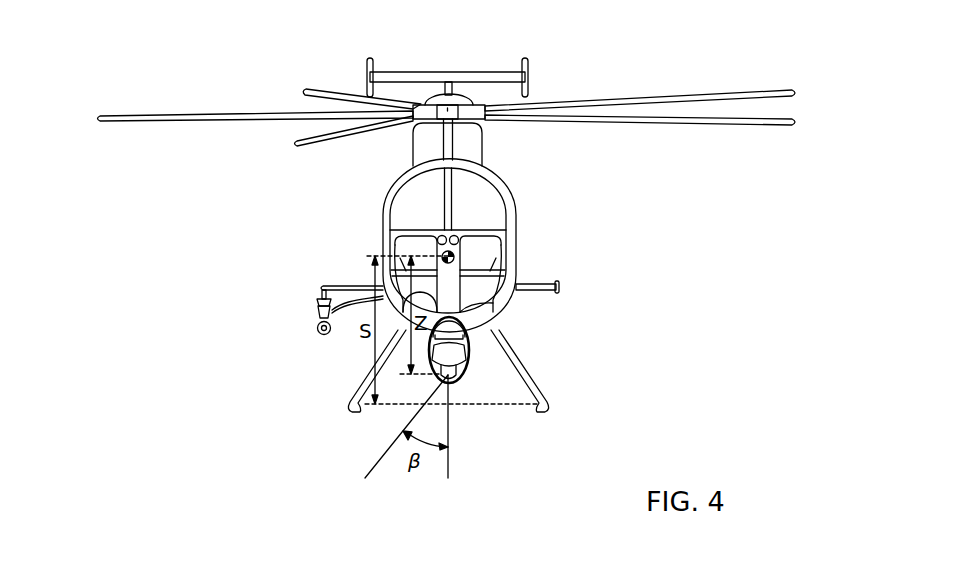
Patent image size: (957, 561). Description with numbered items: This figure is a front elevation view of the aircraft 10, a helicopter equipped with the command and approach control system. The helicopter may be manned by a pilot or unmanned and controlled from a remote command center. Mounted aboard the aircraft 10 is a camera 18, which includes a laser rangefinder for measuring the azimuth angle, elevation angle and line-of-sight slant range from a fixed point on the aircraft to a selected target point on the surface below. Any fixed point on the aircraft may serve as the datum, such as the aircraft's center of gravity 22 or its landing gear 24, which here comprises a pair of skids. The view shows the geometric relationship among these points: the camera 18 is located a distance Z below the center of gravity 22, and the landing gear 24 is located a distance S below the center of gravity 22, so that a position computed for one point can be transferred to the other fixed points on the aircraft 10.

The aircraft 10 is at (512, 193).
The camera 18 is at (464, 357).
The center of gravity 22 is at (455, 254).
The landing gear 24 is at (542, 387).